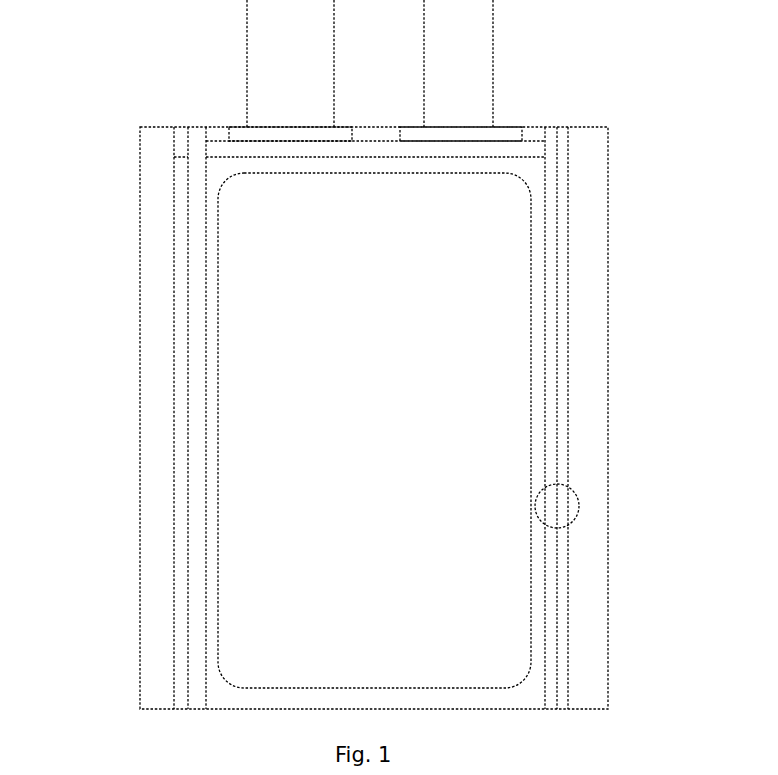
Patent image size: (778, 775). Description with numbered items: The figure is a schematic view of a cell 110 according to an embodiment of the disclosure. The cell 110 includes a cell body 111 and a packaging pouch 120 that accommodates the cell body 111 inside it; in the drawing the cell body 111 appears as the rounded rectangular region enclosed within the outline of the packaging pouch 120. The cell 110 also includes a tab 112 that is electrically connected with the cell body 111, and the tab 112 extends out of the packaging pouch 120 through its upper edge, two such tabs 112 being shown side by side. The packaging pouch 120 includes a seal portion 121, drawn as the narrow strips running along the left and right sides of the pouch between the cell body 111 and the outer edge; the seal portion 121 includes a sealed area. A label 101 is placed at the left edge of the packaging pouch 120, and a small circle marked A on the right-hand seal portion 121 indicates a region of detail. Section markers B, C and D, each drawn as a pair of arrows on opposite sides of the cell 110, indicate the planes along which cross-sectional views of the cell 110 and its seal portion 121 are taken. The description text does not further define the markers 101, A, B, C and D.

The cell 110 is at (102, 24).
The cell body 111 is at (453, 237).
The tab 112 is at (277, 73).
The side edge 101 is at (140, 255).
The packaging pouch 120 is at (608, 232).
The seal portion 121 is at (197, 420).
The detail region A is at (580, 505).
The section line B- B is at (118, 296).
The section line C- C is at (518, 583).
The section line D- D is at (125, 483).